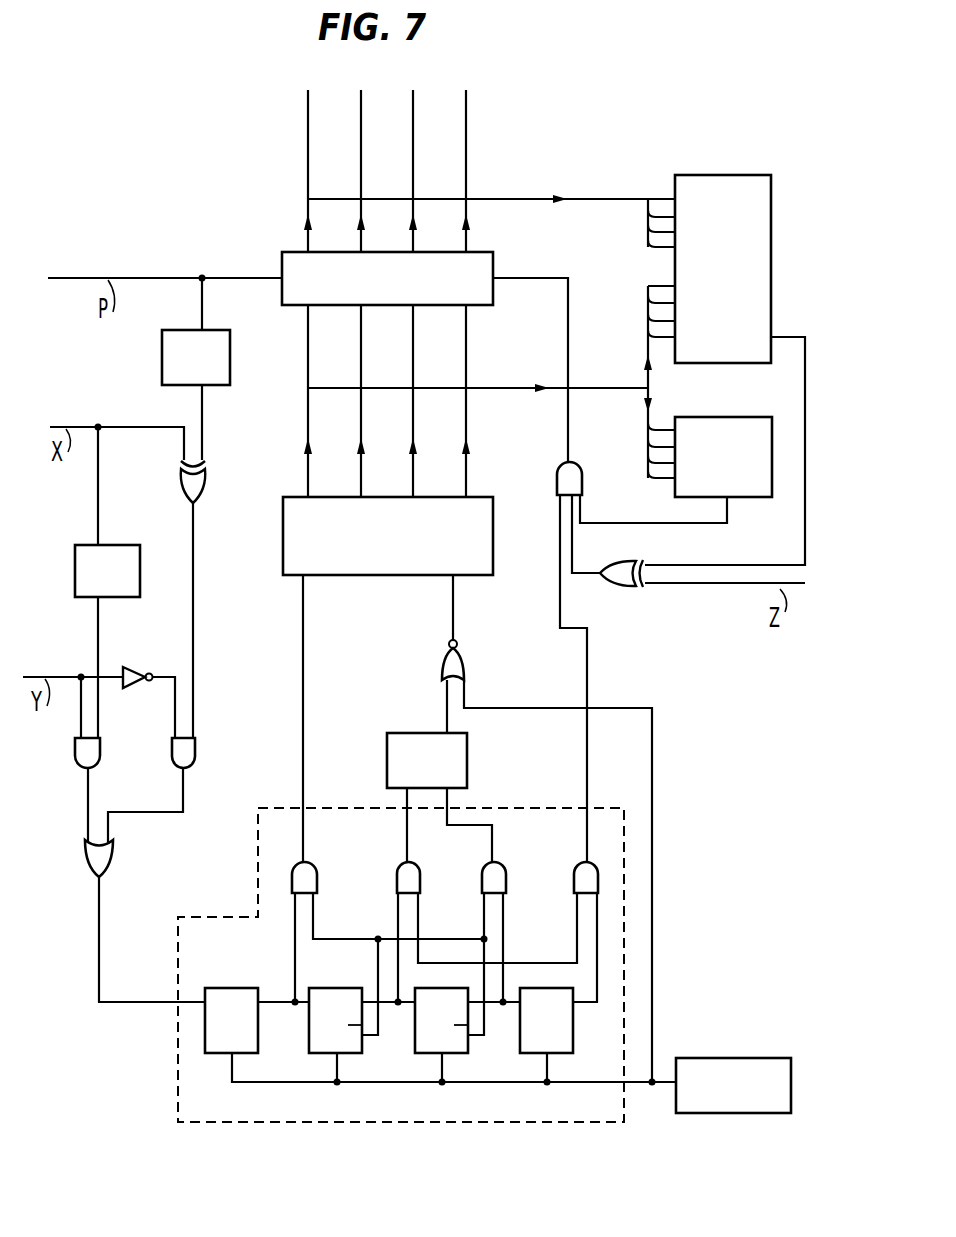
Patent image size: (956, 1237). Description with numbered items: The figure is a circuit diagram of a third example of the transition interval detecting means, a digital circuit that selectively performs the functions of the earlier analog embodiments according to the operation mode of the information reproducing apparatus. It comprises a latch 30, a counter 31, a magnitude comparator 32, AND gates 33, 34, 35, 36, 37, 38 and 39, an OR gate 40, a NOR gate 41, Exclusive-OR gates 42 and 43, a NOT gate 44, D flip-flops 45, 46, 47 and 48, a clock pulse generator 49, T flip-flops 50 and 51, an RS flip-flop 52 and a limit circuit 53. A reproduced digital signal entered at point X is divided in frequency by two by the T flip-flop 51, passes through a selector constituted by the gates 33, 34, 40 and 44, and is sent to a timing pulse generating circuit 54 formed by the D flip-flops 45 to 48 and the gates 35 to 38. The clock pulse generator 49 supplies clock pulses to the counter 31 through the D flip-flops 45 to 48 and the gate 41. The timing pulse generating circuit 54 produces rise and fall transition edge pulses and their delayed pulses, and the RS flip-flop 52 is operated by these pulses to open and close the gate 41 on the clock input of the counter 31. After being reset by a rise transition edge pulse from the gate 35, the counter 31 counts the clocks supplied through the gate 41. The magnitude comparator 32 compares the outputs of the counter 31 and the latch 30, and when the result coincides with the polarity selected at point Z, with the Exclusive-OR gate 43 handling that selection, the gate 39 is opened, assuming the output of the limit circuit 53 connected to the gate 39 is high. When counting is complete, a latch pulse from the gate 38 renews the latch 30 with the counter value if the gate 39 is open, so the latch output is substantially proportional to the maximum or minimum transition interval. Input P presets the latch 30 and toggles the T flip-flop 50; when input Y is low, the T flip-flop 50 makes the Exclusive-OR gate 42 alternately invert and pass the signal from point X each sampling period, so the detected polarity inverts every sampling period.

The latch 30 is at (285, 268).
The counter 31 is at (288, 507).
The magnitude comparator 32 is at (770, 193).
The AND gate 33 is at (98, 753).
The AND gate 34 is at (193, 753).
The AND gate 35 is at (315, 877).
The AND gate 36 is at (420, 877).
The AND gate 37 is at (505, 877).
The AND gate 38 is at (595, 880).
The AND gate 39 is at (577, 470).
The OR gate 40 is at (108, 858).
The NOR gate 41 is at (462, 662).
The Exclusive-OR gate 42 is at (202, 489).
The Exclusive-OR gate 43 is at (623, 589).
The NOT gate 44 is at (136, 667).
The D flip-flop 45 is at (250, 988).
The D flip-flop 46 is at (340, 988).
The D flip-flop 47 is at (417, 1052).
The D flip-flop 48 is at (523, 1053).
The clock pulse generator 49 is at (791, 1094).
The T flip-flop 50 is at (230, 349).
The T flip-flop 51 is at (129, 545).
The RS flip-flop 52 is at (398, 734).
The limit circuit 53 is at (727, 418).
The timing pulse generating circuit 54 is at (322, 1123).